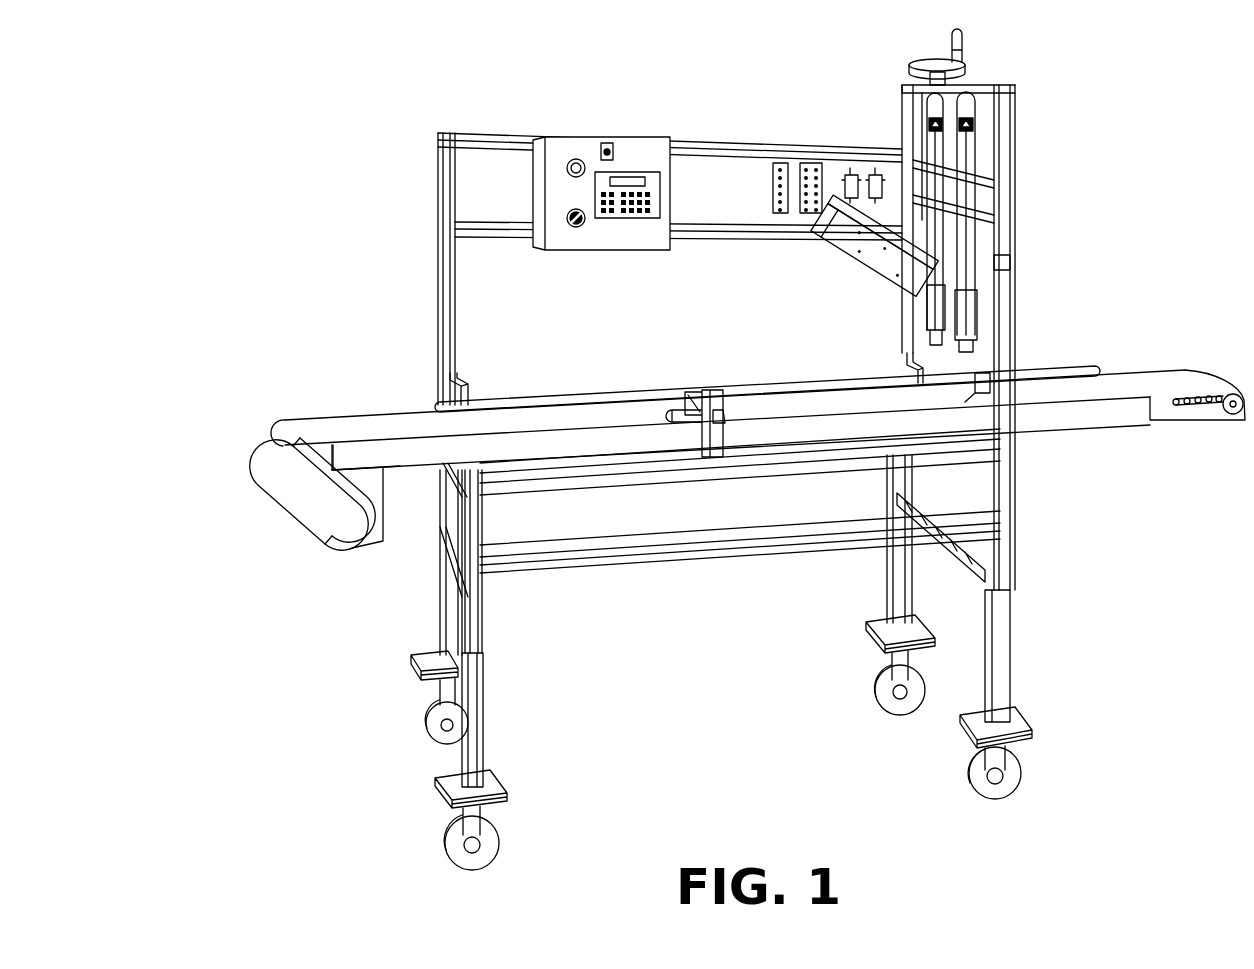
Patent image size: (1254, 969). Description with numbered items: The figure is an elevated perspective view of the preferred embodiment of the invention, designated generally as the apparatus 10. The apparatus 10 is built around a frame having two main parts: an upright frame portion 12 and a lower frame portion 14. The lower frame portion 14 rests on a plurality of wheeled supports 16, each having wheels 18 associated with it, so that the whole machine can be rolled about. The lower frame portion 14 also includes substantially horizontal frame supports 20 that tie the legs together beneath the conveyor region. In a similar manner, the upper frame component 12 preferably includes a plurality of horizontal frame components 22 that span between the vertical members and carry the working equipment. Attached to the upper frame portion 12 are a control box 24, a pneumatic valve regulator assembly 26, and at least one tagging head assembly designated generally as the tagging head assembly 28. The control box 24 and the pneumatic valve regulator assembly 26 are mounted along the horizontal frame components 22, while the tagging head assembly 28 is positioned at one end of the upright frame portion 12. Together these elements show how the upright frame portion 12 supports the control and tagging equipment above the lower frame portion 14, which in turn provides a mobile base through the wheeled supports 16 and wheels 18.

The preferred embodiment 10 is at (393, 415).
The upright frame portion 12 is at (847, 145).
The lower frame portion 14 is at (1010, 544).
The wheeled supports 16 is at (1020, 722).
The wheels 18 is at (1013, 770).
The horizontal frame supports 20 is at (772, 478).
The horizontal frame components 22 is at (473, 133).
The control box 24 is at (610, 138).
The pneumatic valve regulator assembly 26 is at (810, 167).
The tagging head assembly 28 is at (972, 112).